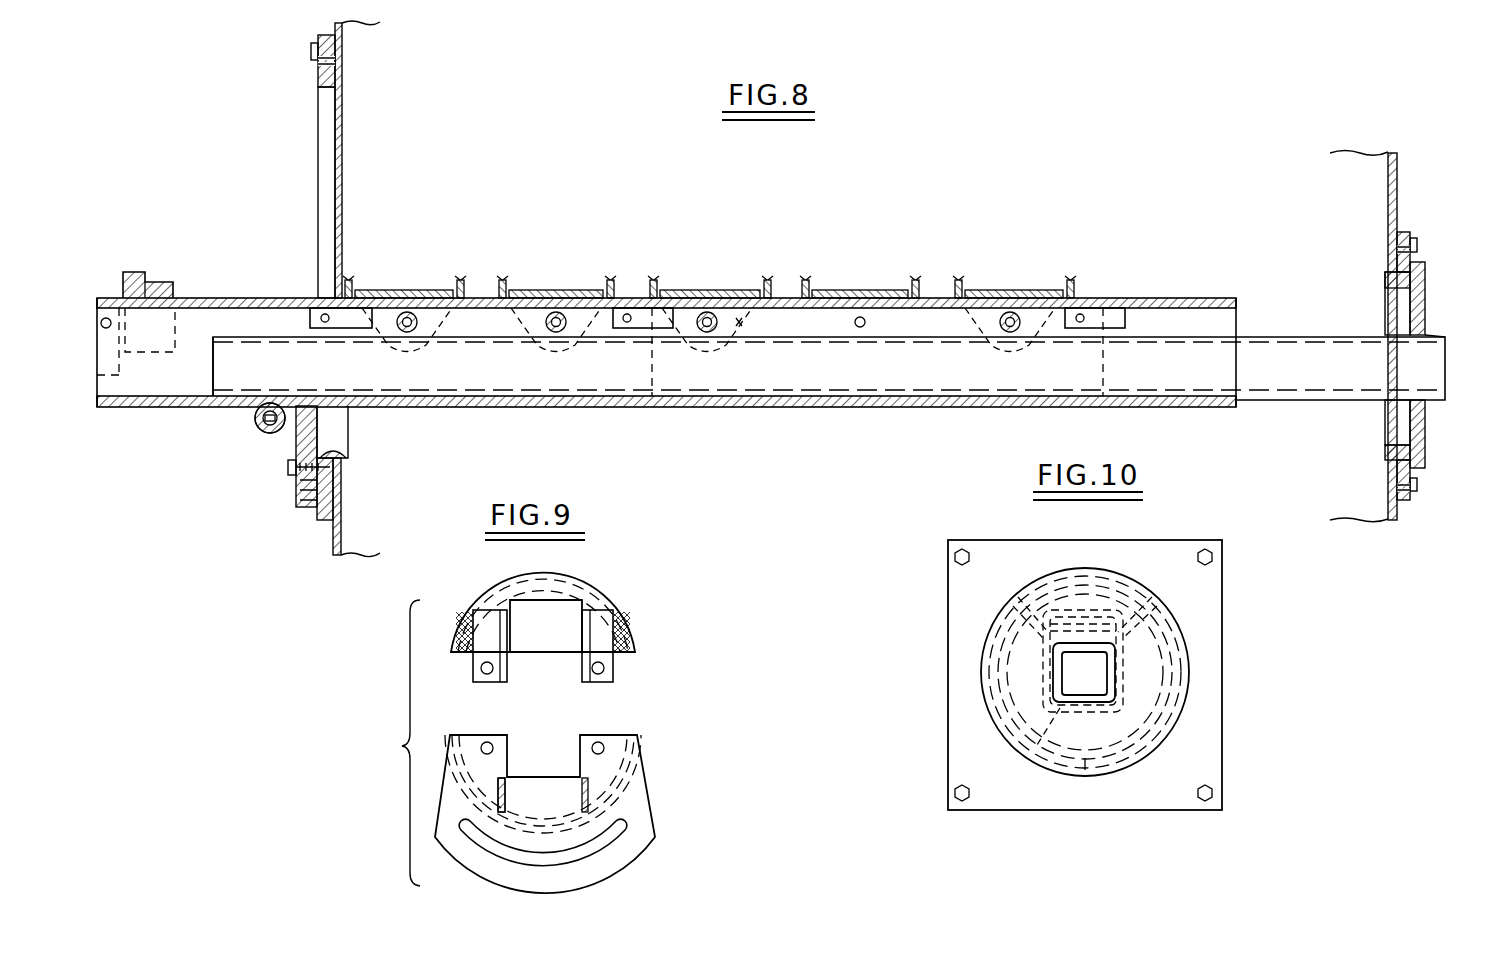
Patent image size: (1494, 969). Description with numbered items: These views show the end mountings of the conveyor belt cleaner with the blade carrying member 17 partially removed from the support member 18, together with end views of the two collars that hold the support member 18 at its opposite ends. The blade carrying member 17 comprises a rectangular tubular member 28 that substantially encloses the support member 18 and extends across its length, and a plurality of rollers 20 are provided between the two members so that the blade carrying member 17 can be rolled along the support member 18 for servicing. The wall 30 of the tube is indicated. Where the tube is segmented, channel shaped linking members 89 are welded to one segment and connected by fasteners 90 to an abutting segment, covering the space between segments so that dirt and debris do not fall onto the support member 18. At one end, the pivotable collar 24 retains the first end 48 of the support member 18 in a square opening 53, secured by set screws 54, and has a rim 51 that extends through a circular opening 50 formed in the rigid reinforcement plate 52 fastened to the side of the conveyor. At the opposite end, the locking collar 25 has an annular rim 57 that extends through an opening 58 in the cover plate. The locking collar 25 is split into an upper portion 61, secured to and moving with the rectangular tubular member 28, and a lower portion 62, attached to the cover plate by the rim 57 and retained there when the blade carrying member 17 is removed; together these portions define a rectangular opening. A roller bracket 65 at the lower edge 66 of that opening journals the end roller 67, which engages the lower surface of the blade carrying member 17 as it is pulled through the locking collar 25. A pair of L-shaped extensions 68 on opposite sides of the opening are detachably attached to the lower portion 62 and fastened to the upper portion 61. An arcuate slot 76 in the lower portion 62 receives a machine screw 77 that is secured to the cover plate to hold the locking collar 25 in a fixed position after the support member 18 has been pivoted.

In FIG. 8, the blade carrying member 17 is at (292, 294).
In FIG. 8, the support member 18 is at (256, 347).
In FIG. 8, the rollers 20 is at (709, 332).
In FIG. 10, the rollers 20 is at (1100, 608).
In FIG. 8, the pivotable collar 24 is at (1427, 287).
In FIG. 10, the pivotable collar 24 is at (1170, 620).
In FIG. 9, the locking collar 25 is at (391, 743).
In FIG. 10, the rectangular tubular member 28 is at (1037, 745).
In FIG. 8, the housing wall 30 is at (746, 322).
In FIG. 8, the first end 48 is at (1447, 366).
In FIG. 8, the circular opening 50 is at (1400, 445).
In FIG. 10, the circular opening 50 is at (1085, 762).
In FIG. 8, the rim 51 is at (1382, 453).
In FIG. 8, the reinforcement plate 52 is at (1400, 500).
In FIG. 10, the reinforcement plate 52 is at (1213, 626).
In FIG. 8, the square opening 53 is at (1420, 400).
In FIG. 10, the square opening 53 is at (1083, 693).
In FIG. 10, the set screws 54 is at (988, 633).
In FIG. 9, the annular rim 57 is at (628, 766).
In FIG. 8, the opening 58 is at (334, 452).
In FIG. 8, the upper portion 61 is at (137, 272).
In FIG. 9, the upper portion 61 is at (598, 590).
In FIG. 8, the lower portion 62 is at (320, 432).
In FIG. 9, the lower portion 62 is at (640, 806).
In FIG. 8, the roller bracket 65 is at (252, 413).
In FIG. 9, the roller bracket 65 is at (500, 800).
In FIG. 8, the lower edge 66 is at (350, 421).
In FIG. 9, the lower edge 66 is at (560, 775).
In FIG. 8, the end roller 67 is at (262, 431).
In FIG. 9, the L-shaped extensions 68 is at (608, 658).
In FIG. 8, the arcuate slot 76 is at (297, 472).
In FIG. 9, the arcuate slot 76 is at (612, 842).
In FIG. 8, the machine screw 77 is at (288, 468).
In FIG. 8, the linking members 89 is at (658, 329).
In FIG. 8, the fasteners 90 is at (626, 324).